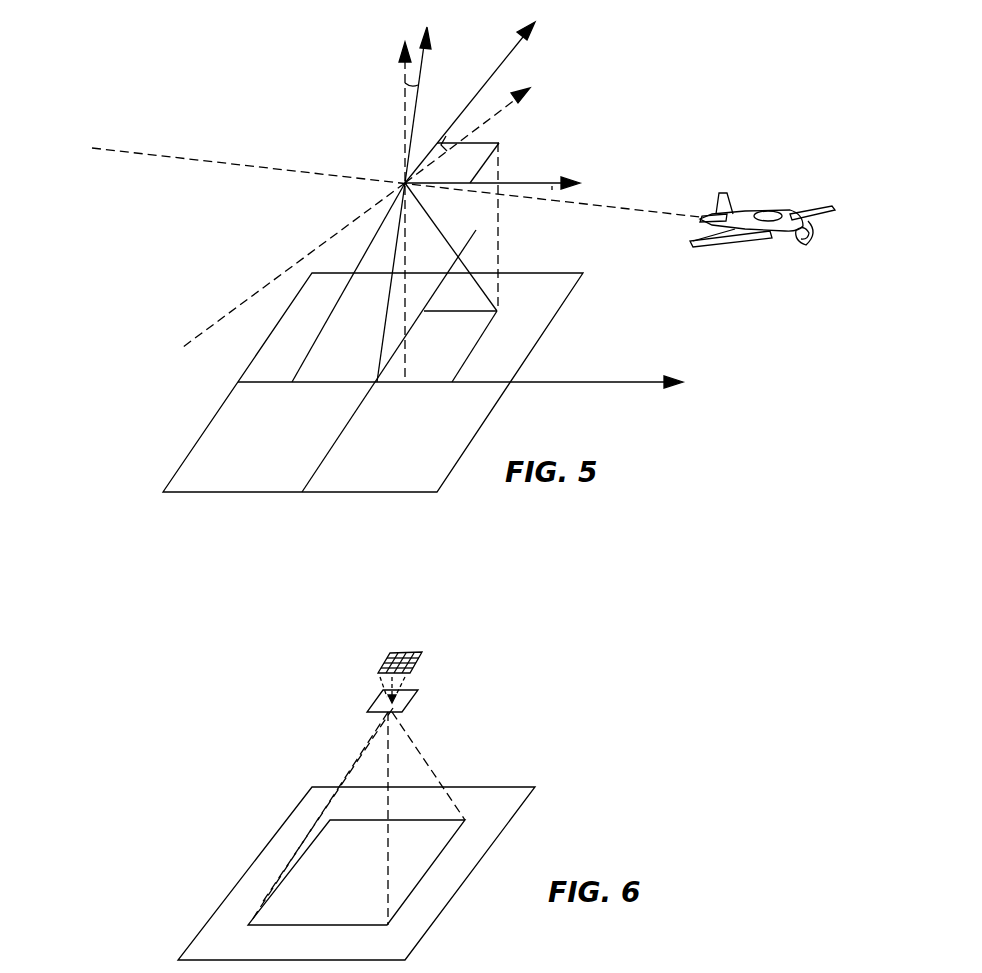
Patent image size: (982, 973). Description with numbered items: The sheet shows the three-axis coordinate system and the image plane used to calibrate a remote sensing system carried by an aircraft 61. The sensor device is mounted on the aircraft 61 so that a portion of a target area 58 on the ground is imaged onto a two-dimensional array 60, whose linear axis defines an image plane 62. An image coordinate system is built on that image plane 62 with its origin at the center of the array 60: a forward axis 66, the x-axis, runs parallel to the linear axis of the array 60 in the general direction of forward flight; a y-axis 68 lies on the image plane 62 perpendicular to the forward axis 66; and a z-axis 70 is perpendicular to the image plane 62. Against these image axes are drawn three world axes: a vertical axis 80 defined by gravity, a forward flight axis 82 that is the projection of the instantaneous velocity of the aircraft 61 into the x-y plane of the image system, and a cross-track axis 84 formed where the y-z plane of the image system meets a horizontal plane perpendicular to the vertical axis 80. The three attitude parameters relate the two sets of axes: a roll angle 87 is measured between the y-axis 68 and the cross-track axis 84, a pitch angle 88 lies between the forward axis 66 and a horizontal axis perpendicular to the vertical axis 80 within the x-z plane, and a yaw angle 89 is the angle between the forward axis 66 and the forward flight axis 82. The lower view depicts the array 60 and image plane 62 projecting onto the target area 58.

In FIG. 5, the target area 58 is at (183, 462).
In FIG. 6, the target area 58 is at (227, 898).
In FIG. 6, the two-dimensional array 60 is at (423, 652).
In FIG. 5, the aircraft 61 is at (780, 210).
In FIG. 5, the image plane 62 is at (499, 150).
In FIG. 6, the image plane 62 is at (386, 665).
In FIG. 5, the forward axis (x-axis) 66 is at (552, 182).
In FIG. 5, the y-axis 68 is at (503, 72).
In FIG. 5, the z-axis 70 is at (424, 66).
In FIG. 5, the vertical axis 80 is at (403, 122).
In FIG. 5, the forward flight axis 82 is at (110, 147).
In FIG. 5, the cross-track axis 84 is at (247, 300).
In FIG. 5, the roll angle 87 is at (442, 138).
In FIG. 5, the pitch angle 88 is at (408, 80).
In FIG. 5, the yaw angle 89 is at (552, 190).